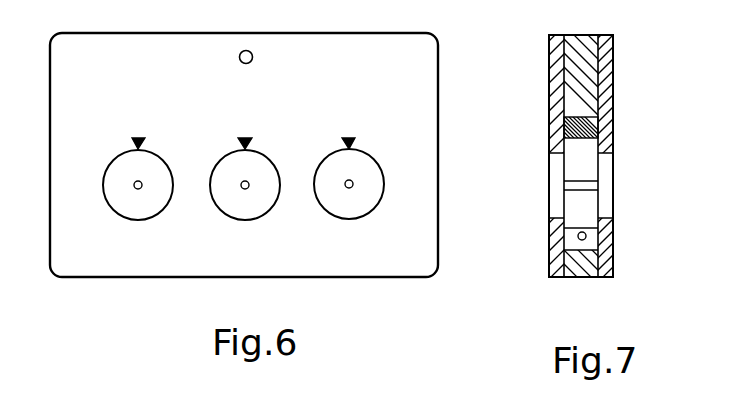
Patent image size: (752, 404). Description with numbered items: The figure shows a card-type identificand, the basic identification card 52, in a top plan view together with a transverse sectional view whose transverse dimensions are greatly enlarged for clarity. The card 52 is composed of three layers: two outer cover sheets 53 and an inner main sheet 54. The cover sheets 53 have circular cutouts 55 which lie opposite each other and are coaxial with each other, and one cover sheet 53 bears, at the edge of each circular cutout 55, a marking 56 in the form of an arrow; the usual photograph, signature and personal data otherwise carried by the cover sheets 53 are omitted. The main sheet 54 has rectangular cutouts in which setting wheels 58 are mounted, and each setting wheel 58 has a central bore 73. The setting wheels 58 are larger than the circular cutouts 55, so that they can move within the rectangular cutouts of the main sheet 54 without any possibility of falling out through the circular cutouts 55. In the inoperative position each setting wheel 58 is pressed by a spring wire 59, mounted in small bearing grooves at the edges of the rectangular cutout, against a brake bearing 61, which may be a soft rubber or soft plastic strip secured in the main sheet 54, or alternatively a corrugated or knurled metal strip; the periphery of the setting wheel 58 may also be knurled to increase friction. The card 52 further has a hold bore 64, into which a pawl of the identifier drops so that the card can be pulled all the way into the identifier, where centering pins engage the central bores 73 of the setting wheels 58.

In FIG. 6, the card 52 is at (355, 52).
In FIG. 6, the hold bore 64 is at (251, 51).
In FIG. 6, the marking 56 is at (241, 138).
In FIG. 6, the central bore 73 is at (141, 188).
In FIG. 7, the central bore 73 is at (570, 185).
In FIG. 7, the cover sheet 53 is at (549, 45).
In FIG. 7, the main sheet 54 is at (588, 90).
In FIG. 7, the brake bearing 61 is at (592, 124).
In FIG. 7, the circular cutout 55 is at (556, 160).
In FIG. 7, the setting wheel 58 is at (590, 205).
In FIG. 7, the spring wire 59 is at (588, 237).